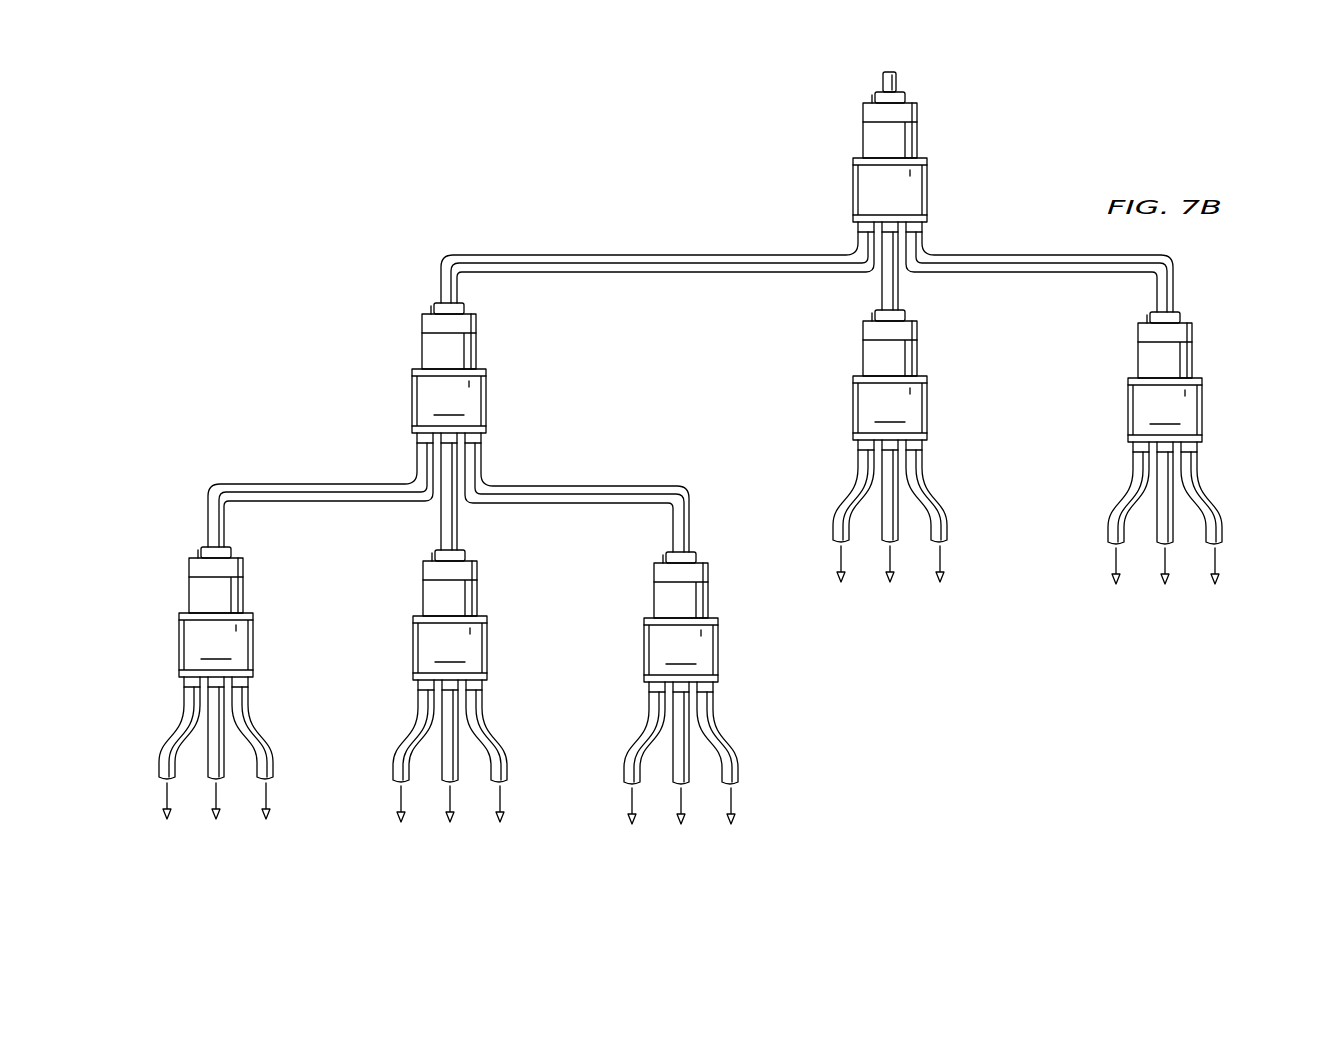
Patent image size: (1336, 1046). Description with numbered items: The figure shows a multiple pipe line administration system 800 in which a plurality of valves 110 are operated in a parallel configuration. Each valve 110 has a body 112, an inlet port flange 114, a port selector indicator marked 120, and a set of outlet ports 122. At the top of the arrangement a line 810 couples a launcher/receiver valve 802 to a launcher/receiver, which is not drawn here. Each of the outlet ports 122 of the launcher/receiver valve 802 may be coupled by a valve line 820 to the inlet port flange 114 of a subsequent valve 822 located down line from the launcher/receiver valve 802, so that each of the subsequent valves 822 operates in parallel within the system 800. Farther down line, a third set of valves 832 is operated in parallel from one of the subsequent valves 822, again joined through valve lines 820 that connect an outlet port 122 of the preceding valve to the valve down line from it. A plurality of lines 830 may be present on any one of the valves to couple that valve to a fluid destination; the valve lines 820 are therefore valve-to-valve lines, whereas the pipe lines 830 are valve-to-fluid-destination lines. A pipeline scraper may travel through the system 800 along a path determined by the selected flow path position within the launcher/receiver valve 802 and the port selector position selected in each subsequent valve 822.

The flow control device 110 is at (955, 158).
The device body 112 is at (863, 140).
The inlet port flange 114 is at (878, 97).
The indicator label 120 is at (690, 528).
The outlet port 122 is at (856, 225).
The system 800 is at (197, 344).
The launcher/receiver valve 802 is at (822, 175).
The line 810 is at (897, 80).
The valve line 820 is at (657, 256).
The subsequent valve 822 is at (412, 398).
The line 830 is at (835, 520).
The third set of valves 832 is at (179, 642).